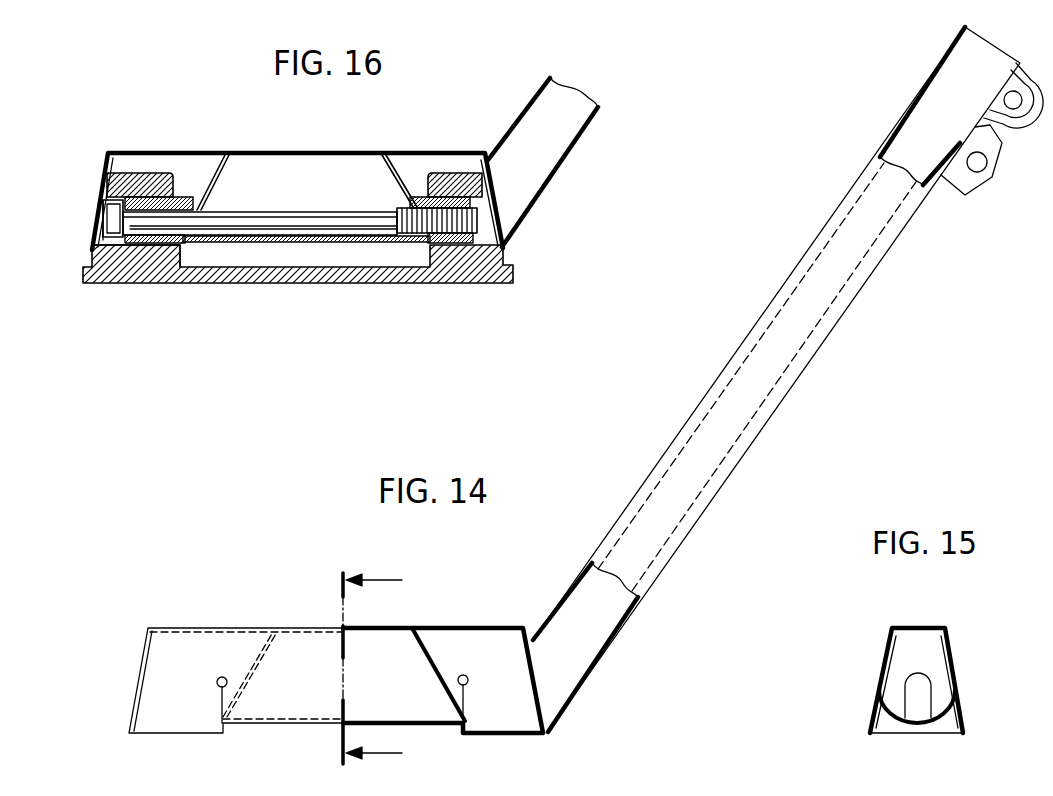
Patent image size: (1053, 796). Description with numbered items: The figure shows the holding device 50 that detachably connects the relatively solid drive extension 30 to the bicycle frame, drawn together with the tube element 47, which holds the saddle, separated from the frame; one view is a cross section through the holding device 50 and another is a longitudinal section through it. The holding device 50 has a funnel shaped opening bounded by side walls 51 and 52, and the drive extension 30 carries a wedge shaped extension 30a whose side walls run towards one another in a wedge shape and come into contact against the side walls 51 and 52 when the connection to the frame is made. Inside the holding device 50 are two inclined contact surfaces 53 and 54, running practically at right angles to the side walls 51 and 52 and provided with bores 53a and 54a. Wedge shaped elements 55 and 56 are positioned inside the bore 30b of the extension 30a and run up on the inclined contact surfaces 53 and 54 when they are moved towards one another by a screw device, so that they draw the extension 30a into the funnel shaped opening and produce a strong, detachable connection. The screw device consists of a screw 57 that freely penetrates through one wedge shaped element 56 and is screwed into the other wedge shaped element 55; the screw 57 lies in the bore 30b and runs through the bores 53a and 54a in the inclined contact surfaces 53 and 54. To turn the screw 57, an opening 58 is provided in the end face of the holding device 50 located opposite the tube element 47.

In FIG. 16, the drive extension 30 is at (367, 270).
In FIG. 16, the wedge shaped extension 30a is at (145, 250).
In FIG. 16, the bore 30b is at (100, 189).
In FIG. 16, the tube element 47 is at (565, 157).
In FIG. 14, the tube element 47 is at (735, 451).
In FIG. 16, the holding device 50 is at (320, 140).
In FIG. 14, the holding device 50 is at (443, 627).
In FIG. 15, the holding device 50 is at (952, 610).
In FIG. 15, the side wall 51 is at (960, 711).
In FIG. 15, the side wall 52 is at (877, 712).
In FIG. 16, the inclined contact surface 53 is at (383, 165).
In FIG. 16, the bore 53a is at (410, 200).
In FIG. 16, the inclined contact surface 54 is at (220, 167).
In FIG. 16, the bore 54a is at (195, 203).
In FIG. 16, the wedge shaped element 55 is at (434, 176).
In FIG. 16, the wedge shaped element 56 is at (157, 198).
In FIG. 16, the screw 57 is at (297, 222).
In FIG. 16, the opening 58 is at (101, 218).